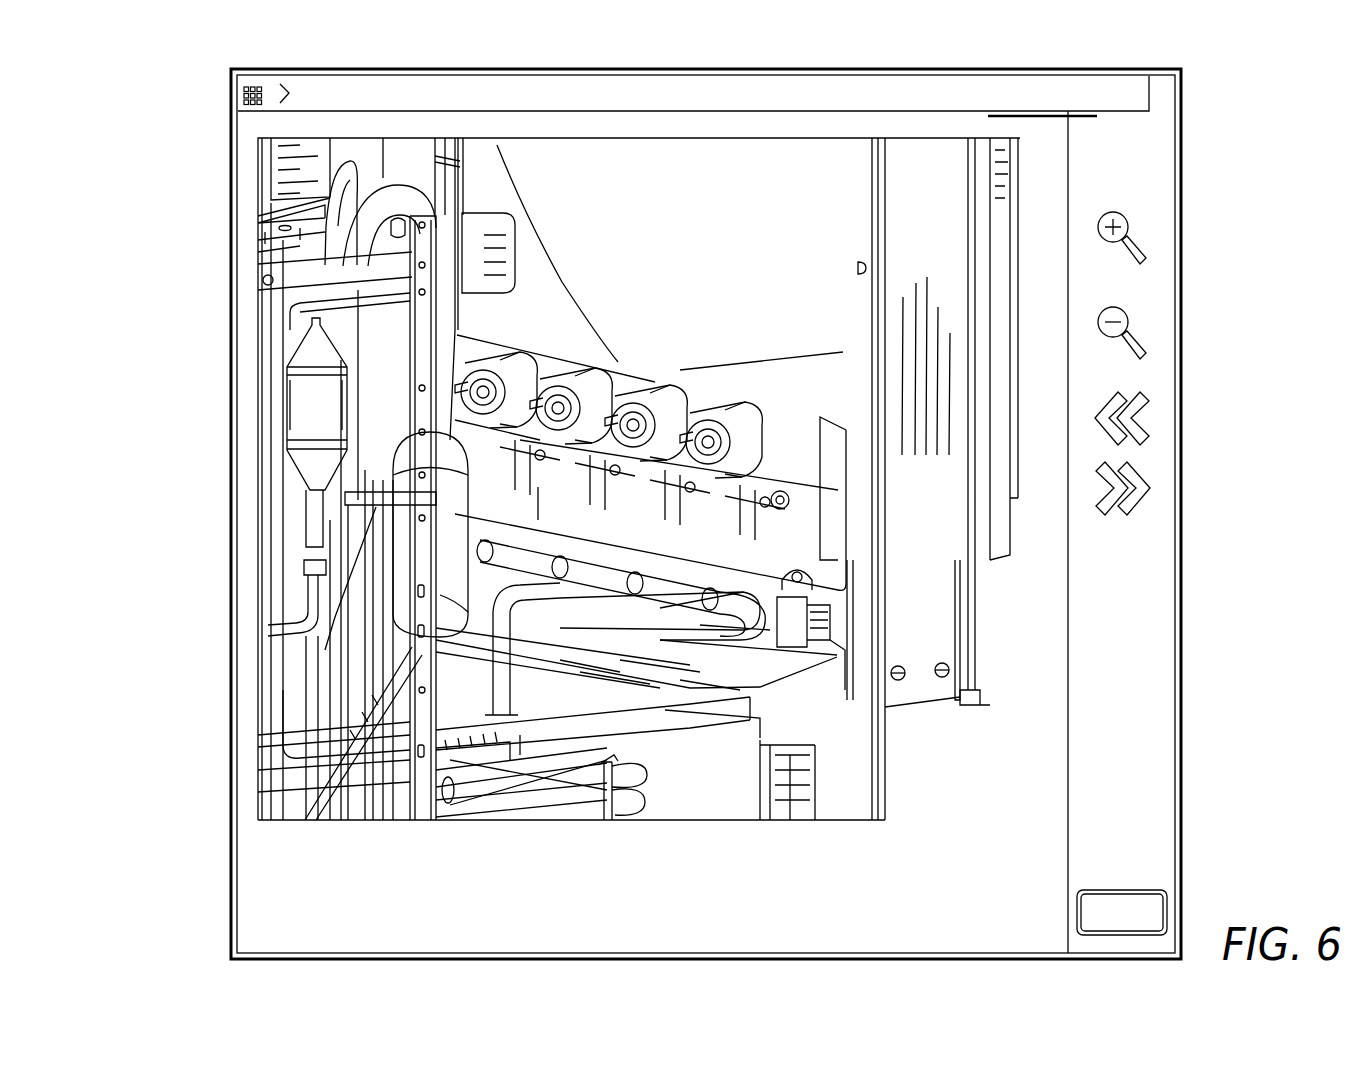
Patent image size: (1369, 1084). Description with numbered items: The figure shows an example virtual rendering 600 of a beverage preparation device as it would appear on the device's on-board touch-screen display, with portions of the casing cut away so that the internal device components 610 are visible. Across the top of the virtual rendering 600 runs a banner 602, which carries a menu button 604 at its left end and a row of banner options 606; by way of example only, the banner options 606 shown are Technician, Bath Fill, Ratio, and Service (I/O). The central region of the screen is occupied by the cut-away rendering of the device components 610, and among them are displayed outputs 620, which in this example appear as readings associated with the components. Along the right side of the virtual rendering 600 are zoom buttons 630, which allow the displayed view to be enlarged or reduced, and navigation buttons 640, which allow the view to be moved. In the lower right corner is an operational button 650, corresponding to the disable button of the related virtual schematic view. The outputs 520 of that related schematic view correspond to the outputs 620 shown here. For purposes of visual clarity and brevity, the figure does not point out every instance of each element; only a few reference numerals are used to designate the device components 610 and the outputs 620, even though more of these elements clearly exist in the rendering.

The virtual rendering 600 is at (157, 90).
The banner 602 is at (472, 84).
The menu button 604 is at (258, 84).
The banner options 606 is at (627, 84).
The device components 610 is at (795, 360).
The outputs 620 is at (822, 568).
The zoom buttons 630 is at (1140, 248).
The navigation buttons 640 is at (1138, 402).
The operational button 650 is at (1122, 890).
The outputs 520 is at (285, 695).